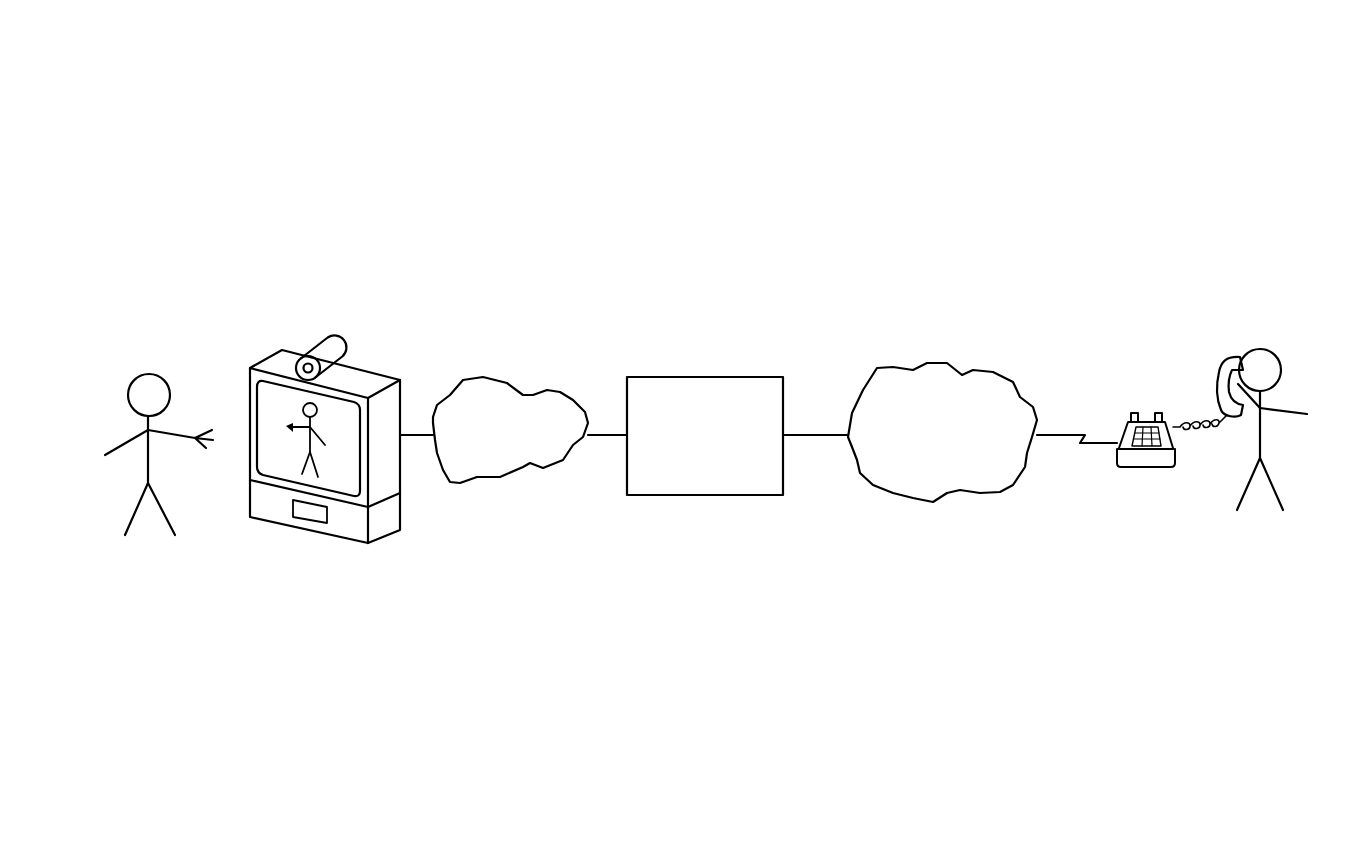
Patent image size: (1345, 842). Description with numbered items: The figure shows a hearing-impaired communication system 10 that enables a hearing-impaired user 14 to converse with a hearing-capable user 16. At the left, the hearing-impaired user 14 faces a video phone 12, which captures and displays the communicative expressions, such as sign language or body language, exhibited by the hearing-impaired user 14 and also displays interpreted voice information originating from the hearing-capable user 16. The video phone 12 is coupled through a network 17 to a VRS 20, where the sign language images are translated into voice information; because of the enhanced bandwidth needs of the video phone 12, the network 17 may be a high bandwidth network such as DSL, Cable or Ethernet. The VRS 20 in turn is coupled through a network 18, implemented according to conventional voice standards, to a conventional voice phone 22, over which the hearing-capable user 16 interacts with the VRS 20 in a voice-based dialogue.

The hearing-impaired communication system 10 is at (876, 104).
The video phone 12 is at (347, 330).
The hearing-impaired user 14 is at (132, 384).
The hearing-capable user 16 is at (1272, 353).
The network 17 is at (497, 377).
The network 18 is at (960, 372).
The VRS 20 is at (720, 375).
The conventional voice phone 22 is at (1150, 398).